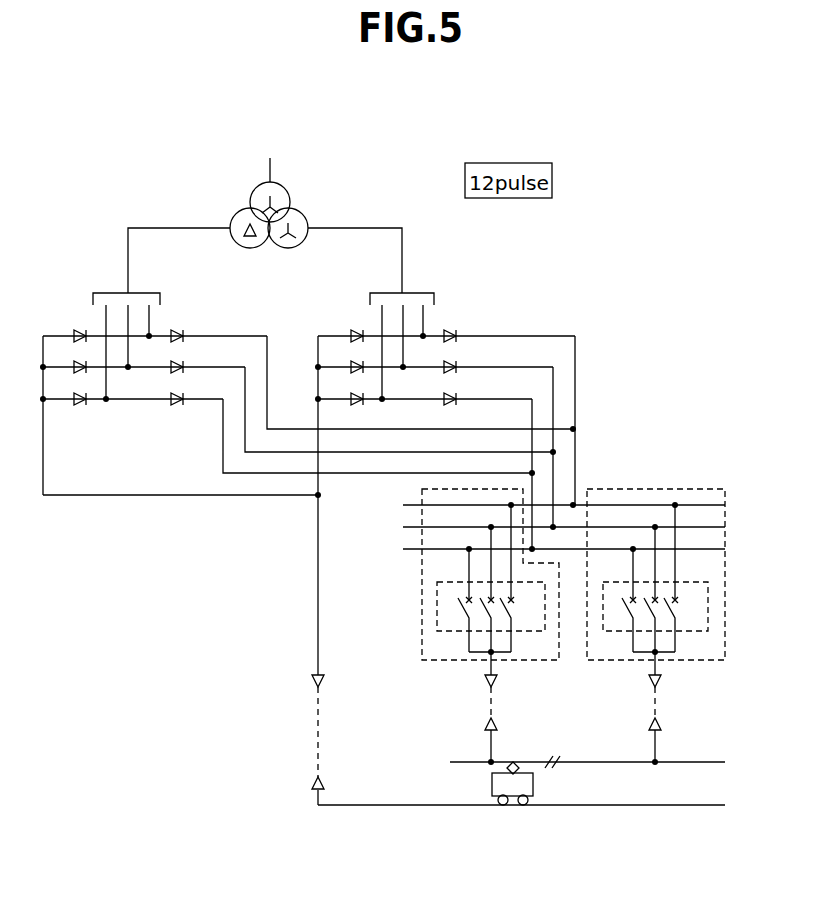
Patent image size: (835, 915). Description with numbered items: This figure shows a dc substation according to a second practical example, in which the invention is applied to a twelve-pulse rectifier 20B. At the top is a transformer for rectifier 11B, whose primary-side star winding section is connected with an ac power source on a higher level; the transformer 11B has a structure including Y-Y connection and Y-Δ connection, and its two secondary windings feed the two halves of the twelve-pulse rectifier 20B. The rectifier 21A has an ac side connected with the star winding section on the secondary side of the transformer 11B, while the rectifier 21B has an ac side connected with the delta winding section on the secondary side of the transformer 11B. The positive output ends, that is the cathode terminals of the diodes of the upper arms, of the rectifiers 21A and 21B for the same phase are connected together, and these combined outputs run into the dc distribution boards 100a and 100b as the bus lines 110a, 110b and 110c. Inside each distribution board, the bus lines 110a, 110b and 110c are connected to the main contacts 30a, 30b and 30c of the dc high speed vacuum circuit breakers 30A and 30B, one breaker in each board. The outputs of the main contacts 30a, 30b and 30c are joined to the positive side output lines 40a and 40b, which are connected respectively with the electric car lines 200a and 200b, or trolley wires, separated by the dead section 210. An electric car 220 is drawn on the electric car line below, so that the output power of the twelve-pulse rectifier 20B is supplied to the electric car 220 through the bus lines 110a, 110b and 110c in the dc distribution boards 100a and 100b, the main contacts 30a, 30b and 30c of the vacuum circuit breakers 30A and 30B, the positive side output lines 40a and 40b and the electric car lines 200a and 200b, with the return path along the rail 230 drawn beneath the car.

The transformer for rectifier 11B is at (247, 207).
The rectifier 21B is at (74, 332).
The rectifier 21A is at (432, 332).
The 12-pulse rectifier 20B is at (434, 279).
The dc distribution board 100a is at (422, 572).
The dc distribution board 100b is at (667, 481).
The bus line 110a is at (403, 505).
The bus line 110b is at (403, 527).
The bus line 110c is at (403, 549).
The dc high speed vacuum circuit breaker 30A is at (437, 600).
The dc high speed vacuum circuit breaker 30B is at (708, 608).
The main contact 30a is at (503, 609).
The main contact 30b is at (481, 609).
The main contact 30c is at (459, 607).
The positive side output line 40a is at (479, 652).
The positive side output line 40b is at (665, 652).
The electric car line 200a is at (462, 763).
The electric car line 200b is at (690, 763).
The dead section 210 is at (556, 764).
The electric car 220 is at (540, 786).
The rail 230 is at (588, 805).